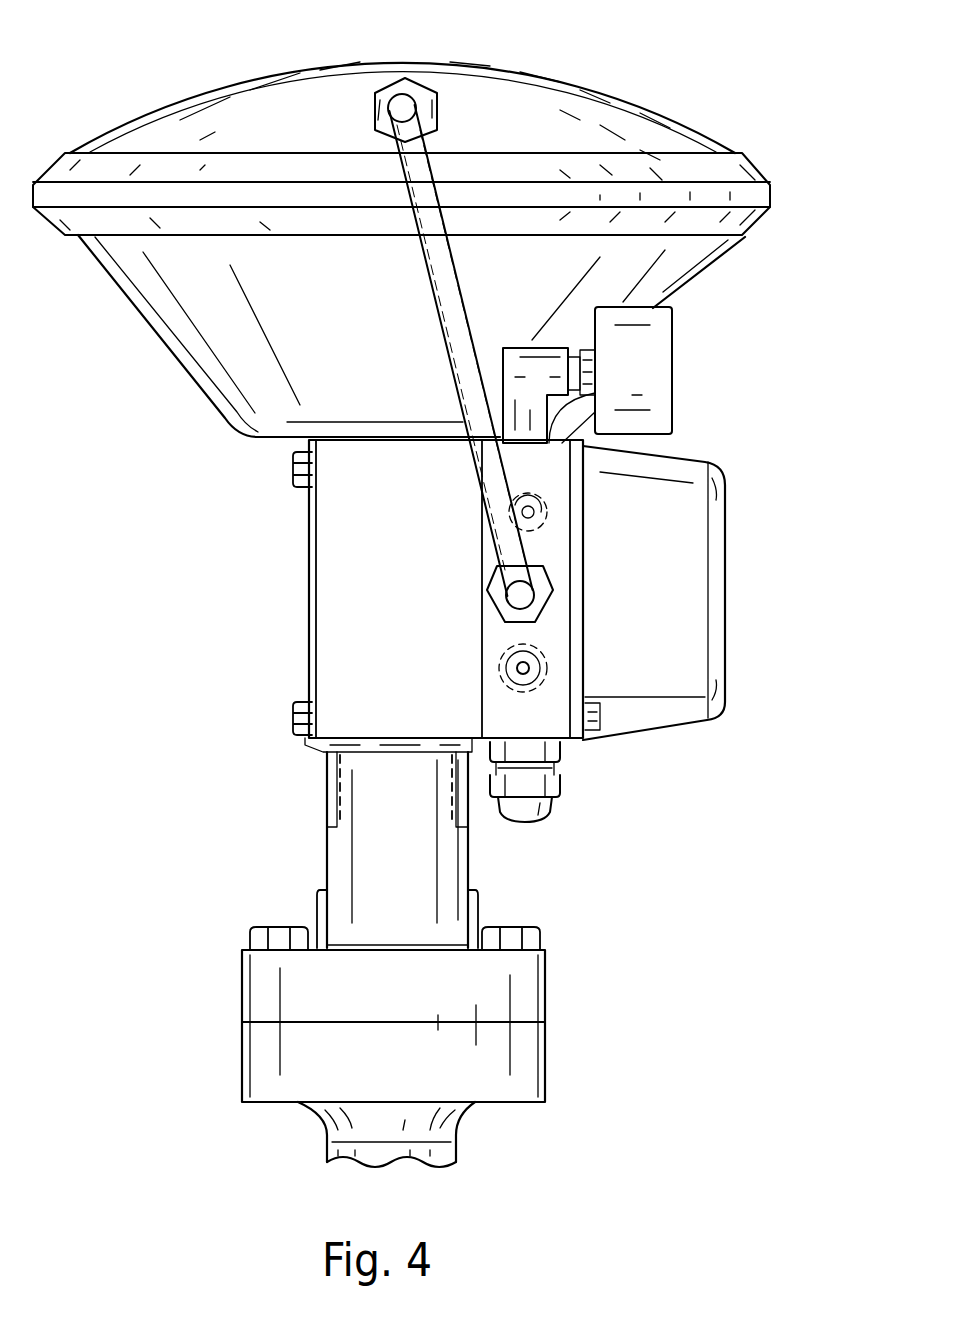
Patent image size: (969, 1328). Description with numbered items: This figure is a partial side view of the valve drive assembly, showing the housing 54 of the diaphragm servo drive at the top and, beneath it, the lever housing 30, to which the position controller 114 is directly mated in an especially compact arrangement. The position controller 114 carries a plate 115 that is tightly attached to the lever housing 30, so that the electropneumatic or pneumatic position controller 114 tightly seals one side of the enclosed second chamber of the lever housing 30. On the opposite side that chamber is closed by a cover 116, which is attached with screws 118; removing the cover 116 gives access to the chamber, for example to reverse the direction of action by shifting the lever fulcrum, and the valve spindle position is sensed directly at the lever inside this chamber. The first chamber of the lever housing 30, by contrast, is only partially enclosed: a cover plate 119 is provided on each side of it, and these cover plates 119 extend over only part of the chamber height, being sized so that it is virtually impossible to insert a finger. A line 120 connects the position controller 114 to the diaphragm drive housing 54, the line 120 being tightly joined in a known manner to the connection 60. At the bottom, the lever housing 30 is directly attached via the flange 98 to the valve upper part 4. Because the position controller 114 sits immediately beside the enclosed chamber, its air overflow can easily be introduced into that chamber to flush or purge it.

The valve upper part 4 is at (523, 1072).
The lever housing 30 is at (360, 849).
The housing of the servo drive 54 is at (181, 365).
The connection 60 is at (426, 98).
The flange 98 is at (523, 992).
The position controller 114 is at (727, 607).
The plate 115 is at (540, 724).
The cover 116 is at (315, 603).
The screws 118 is at (296, 470).
The cover plates 119 is at (332, 796).
The line 120 is at (408, 172).